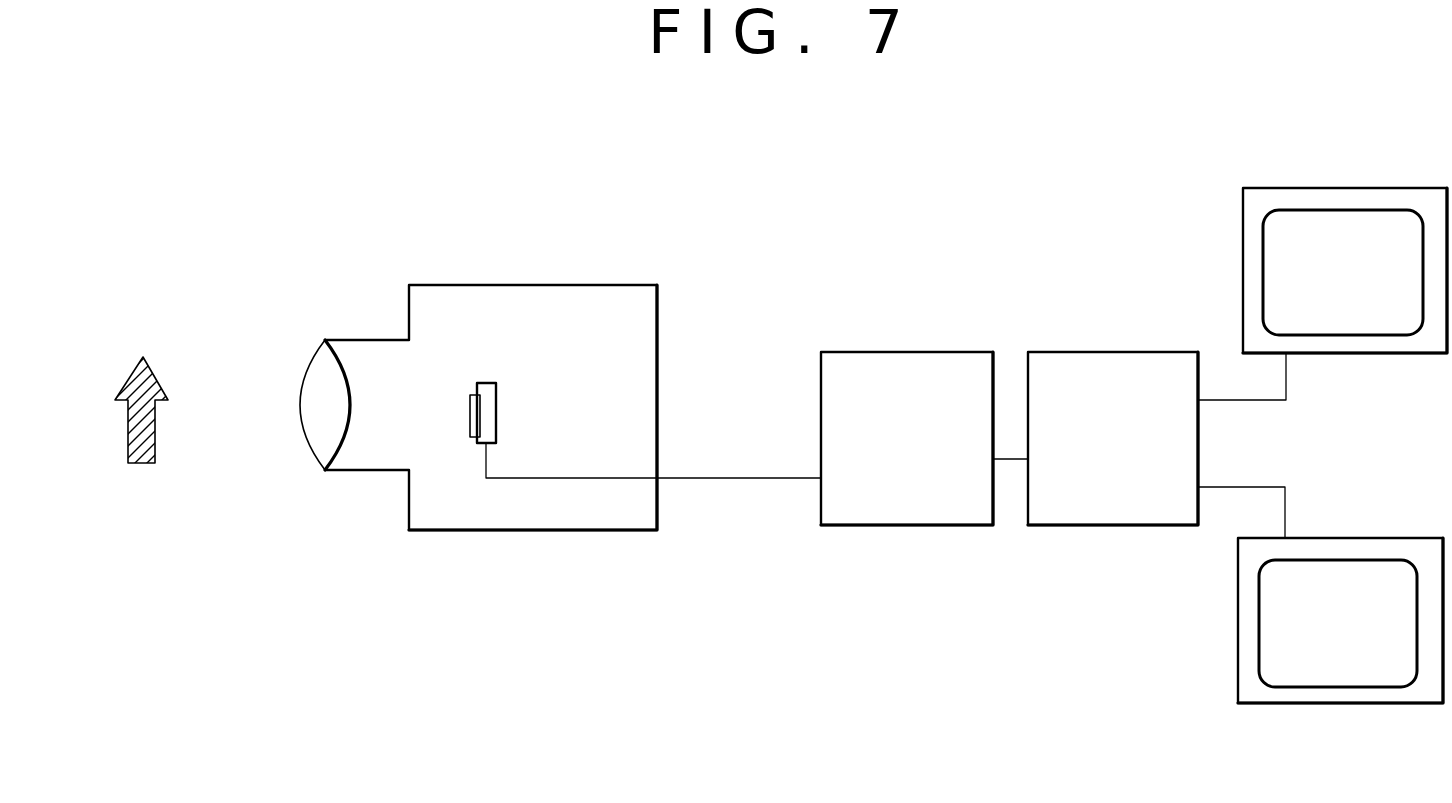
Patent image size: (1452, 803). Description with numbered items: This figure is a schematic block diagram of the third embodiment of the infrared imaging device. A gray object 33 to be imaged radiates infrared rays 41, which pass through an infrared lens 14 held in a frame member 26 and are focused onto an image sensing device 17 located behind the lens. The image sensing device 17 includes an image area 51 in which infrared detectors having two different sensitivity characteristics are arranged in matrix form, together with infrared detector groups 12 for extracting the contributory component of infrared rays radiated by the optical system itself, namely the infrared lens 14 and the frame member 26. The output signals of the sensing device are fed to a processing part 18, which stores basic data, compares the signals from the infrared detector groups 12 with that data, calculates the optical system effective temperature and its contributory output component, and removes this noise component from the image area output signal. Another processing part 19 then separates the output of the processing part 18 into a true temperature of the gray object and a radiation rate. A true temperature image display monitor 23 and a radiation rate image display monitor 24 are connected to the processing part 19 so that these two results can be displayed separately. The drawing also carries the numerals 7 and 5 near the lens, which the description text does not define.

The gray object 33 is at (134, 363).
The infrared rays 41 is at (182, 422).
The infrared lens 14 is at (308, 352).
The frame member 26 is at (378, 338).
The light beam 7 is at (375, 372).
The light beam 5 is at (368, 427).
The image sensing device 17 is at (487, 383).
The image area 51 is at (496, 396).
The infrared detector groups 12 is at (479, 423).
The processing part 18 is at (907, 352).
The processing part 19 is at (1100, 352).
The true temperature image display monitor 23 is at (1345, 193).
The radiation rate image display monitor 24 is at (1365, 550).